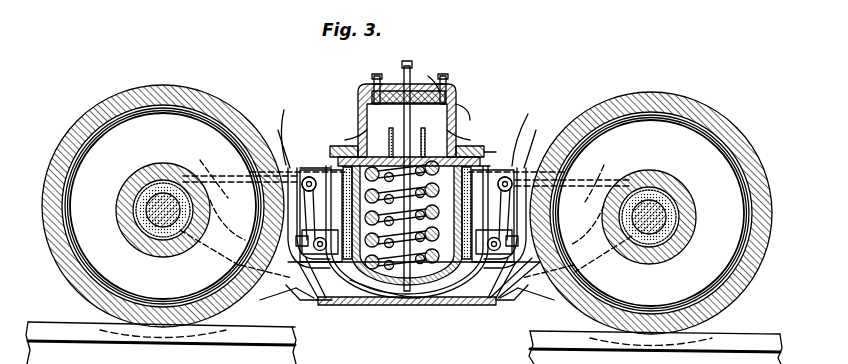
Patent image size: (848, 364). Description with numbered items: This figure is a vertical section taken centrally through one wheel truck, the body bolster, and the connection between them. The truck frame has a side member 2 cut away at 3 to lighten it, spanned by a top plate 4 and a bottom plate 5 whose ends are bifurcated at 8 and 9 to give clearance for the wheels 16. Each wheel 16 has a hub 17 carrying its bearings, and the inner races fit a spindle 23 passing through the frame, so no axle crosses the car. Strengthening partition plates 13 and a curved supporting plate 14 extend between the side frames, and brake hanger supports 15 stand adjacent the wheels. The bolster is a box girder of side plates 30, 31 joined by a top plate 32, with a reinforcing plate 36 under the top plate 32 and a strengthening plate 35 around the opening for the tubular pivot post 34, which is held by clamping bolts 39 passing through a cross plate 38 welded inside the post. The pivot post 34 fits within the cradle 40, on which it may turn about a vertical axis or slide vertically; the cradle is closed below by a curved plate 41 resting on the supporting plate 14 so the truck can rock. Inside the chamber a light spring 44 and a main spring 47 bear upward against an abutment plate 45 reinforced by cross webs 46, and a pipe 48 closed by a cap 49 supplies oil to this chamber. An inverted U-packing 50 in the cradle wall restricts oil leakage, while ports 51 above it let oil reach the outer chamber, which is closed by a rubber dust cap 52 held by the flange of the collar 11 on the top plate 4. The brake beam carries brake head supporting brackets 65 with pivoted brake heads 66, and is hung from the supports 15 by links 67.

The side member 2 is at (476, 300).
The cut-away portion 3 is at (406, 169).
The top plate 4 is at (312, 157).
The bottom plate 5 is at (326, 304).
The bifurcation of top plate 8 is at (403, 138).
The bifurcation of bottom plate 9 is at (406, 308).
The collar 11 is at (499, 154).
The partition plate 13 is at (358, 280).
The supporting plate 14 is at (412, 300).
The brake hanger support 15 is at (292, 124).
The wheel 16 is at (105, 120).
The hub 17 is at (158, 222).
The spindle 23 is at (165, 232).
The side plate 30 is at (349, 102).
The side plate 31 is at (458, 116).
The top plate 32 is at (378, 84).
The pivot post 34 is at (462, 136).
The strengthening plate 35 is at (345, 150).
The reinforcing plate 36 is at (453, 83).
The cross plate 38 is at (467, 108).
The clamping bolt 39 is at (374, 85).
The cradle 40 is at (530, 128).
The curved plate 41 is at (372, 296).
The light spring 44 is at (360, 302).
The abutment plate 45 is at (364, 126).
The cross web 46 is at (404, 145).
The spring 47 is at (436, 300).
The pipe 48 is at (428, 76).
The cap 49 is at (412, 58).
The U-packing 50 is at (348, 212).
The port 51 is at (342, 158).
The dust cap 52 is at (478, 144).
The brake head supporting bracket 65 is at (407, 233).
The brake head 66 is at (399, 307).
The link 67 is at (300, 206).